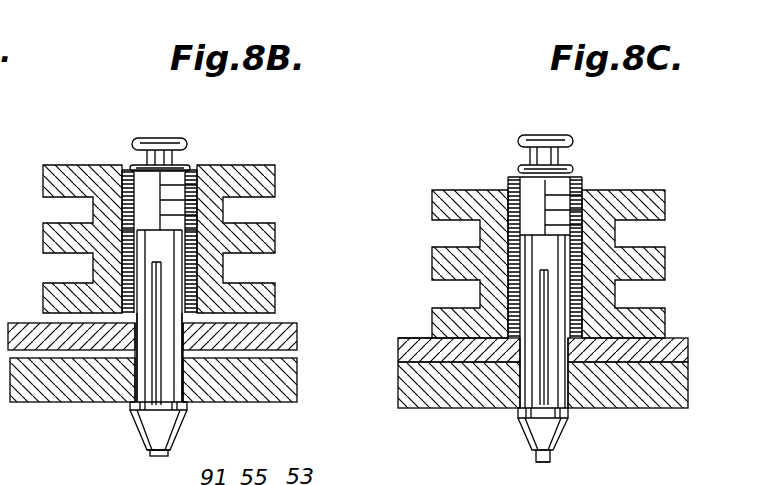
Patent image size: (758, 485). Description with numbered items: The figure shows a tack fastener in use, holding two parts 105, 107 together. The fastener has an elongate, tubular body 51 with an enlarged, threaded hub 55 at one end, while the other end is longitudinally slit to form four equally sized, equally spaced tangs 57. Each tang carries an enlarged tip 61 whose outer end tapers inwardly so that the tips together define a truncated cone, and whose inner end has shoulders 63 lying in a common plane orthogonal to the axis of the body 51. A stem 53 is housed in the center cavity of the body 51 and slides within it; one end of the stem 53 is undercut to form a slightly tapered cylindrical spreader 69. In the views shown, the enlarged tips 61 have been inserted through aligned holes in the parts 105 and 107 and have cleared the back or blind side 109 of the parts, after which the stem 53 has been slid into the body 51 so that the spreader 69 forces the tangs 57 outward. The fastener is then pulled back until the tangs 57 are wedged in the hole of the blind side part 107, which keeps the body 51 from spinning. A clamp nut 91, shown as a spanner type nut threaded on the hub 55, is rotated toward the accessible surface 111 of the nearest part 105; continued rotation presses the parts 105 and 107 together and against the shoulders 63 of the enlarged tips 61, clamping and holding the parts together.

In FIG. 8B, the elongate, tubular body 51 is at (190, 277).
In FIG. 8C, the elongate, tubular body 51 is at (592, 186).
In FIG. 8B, the stem 53 is at (149, 458).
In FIG. 8C, the stem 53 is at (545, 128).
In FIG. 8B, the enlarged, threaded hub 55 is at (137, 165).
In FIG. 8C, the enlarged, threaded hub 55 is at (571, 176).
In FIG. 8B, the tangs 57 is at (140, 300).
In FIG. 8C, the tangs 57 is at (528, 300).
In FIG. 8B, the enlarged tip 61 is at (136, 430).
In FIG. 8C, the enlarged tip 61 is at (520, 434).
In FIG. 8B, the shoulders 63 is at (143, 394).
In FIG. 8C, the cylindrical spreader 69 is at (538, 456).
In FIG. 8B, the clamp nut 91 is at (262, 181).
In FIG. 8C, the clamp nut 91 is at (650, 208).
In FIG. 8B, the part 105 is at (283, 333).
In FIG. 8C, the part 105 is at (670, 351).
In FIG. 8B, the part 107 is at (298, 368).
In FIG. 8C, the part 107 is at (667, 403).
In FIG. 8B, the blind side 109 is at (245, 402).
In FIG. 8C, the blind side 109 is at (456, 410).
In FIG. 8C, the accessible surface 111 is at (418, 338).